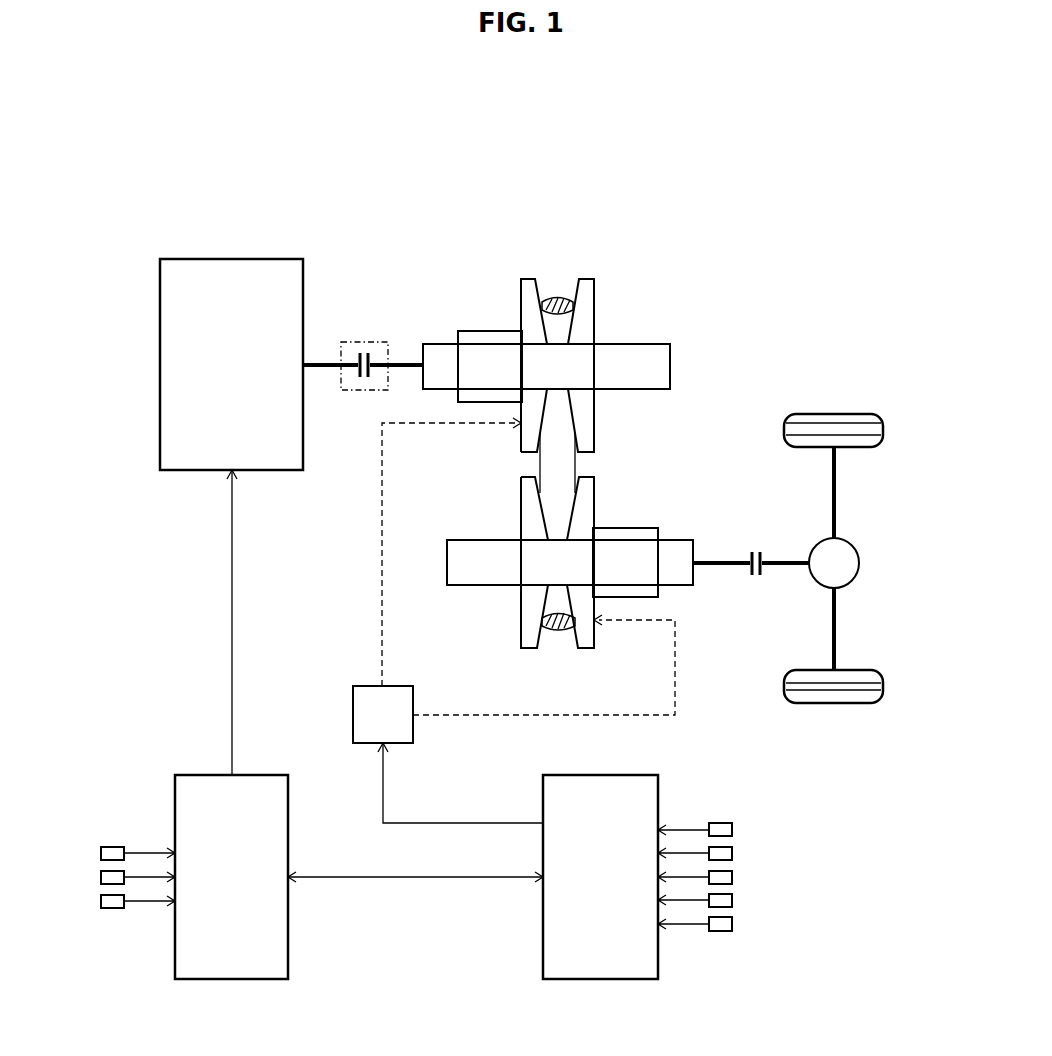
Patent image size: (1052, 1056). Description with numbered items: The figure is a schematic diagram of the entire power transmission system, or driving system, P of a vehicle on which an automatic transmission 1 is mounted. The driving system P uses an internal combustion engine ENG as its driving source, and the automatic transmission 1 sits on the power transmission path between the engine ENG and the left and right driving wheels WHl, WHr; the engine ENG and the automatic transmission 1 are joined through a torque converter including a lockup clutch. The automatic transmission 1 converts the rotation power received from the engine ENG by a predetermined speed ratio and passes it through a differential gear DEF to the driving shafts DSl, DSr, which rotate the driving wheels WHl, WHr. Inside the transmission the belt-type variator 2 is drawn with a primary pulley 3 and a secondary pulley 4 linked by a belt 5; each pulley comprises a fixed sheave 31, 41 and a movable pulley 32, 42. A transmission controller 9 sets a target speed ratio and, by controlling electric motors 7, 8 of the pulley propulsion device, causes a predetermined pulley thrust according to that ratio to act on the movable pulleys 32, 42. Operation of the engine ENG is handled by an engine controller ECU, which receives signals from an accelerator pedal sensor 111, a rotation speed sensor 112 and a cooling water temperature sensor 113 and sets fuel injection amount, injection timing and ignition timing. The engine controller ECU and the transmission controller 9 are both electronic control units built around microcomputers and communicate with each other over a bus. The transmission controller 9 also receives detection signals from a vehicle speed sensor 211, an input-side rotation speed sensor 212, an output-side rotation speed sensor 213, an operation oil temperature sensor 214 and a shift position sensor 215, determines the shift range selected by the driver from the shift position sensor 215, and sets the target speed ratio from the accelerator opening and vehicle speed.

The automatic transmission 1 is at (455, 231).
The power transmission system P is at (677, 208).
The belt type continuously variable transmission mechanism 2 is at (692, 395).
The primary pulley 3 is at (546, 339).
The movable sheave of primary pulley 31 is at (593, 279).
The movable pulley 32 is at (525, 279).
The secondary pulley 4 is at (570, 591).
The fixed sheave of secondary pulley 41 is at (525, 650).
The movable pulley 42 is at (590, 650).
The belt 5 is at (572, 298).
The electric motor 7 is at (506, 580).
The electric motor 8 is at (367, 683).
The transmission controller 9 is at (643, 773).
The accelerator pedal sensor 111 is at (101, 853).
The rotation speed sensor 112 is at (101, 877).
The cooling water temperature sensor 113 is at (101, 901).
The vehicle speed sensor 211 is at (732, 830).
The input-side rotation speed sensor 212 is at (732, 853).
The output-side rotation speed sensor 213 is at (732, 877).
The operation oil temperature sensor 214 is at (732, 900).
The shift position sensor 215 is at (732, 924).
The engine ENG is at (238, 258).
The engine controller ECU is at (270, 773).
The differential gear DEF is at (860, 563).
The driving shaft DSl is at (834, 497).
The driving shaft DSr is at (834, 628).
The driving wheel WHl is at (883, 430).
The driving wheel WHr is at (883, 687).